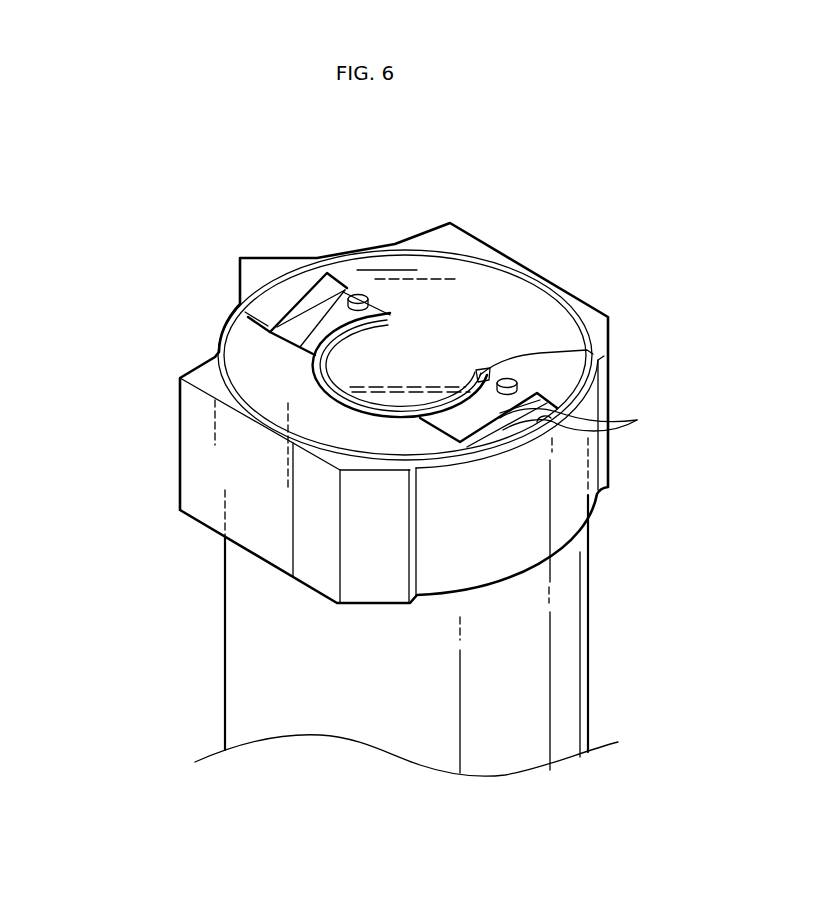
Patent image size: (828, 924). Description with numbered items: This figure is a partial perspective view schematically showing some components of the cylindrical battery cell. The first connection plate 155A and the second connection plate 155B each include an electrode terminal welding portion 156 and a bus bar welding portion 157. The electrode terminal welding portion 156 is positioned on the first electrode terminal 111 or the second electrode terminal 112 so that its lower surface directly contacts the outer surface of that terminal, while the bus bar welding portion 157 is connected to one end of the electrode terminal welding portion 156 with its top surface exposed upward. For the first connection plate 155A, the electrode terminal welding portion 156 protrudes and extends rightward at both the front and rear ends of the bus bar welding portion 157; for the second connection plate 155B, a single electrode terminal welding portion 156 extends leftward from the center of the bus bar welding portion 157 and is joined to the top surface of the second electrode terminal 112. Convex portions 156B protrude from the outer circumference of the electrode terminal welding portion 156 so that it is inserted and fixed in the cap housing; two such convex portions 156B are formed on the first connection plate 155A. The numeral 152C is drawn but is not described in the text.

The second electrode terminal 112 is at (560, 355).
The first electrode terminal 111 is at (280, 308).
The protrusion pin 152C is at (336, 318).
The first connection plate 155A is at (120, 280).
The second connection plate 155B is at (545, 173).
The electrode terminal welding portion 156 is at (400, 355).
The convex portion 156B is at (309, 311).
The bus bar welding portion 157 is at (485, 310).